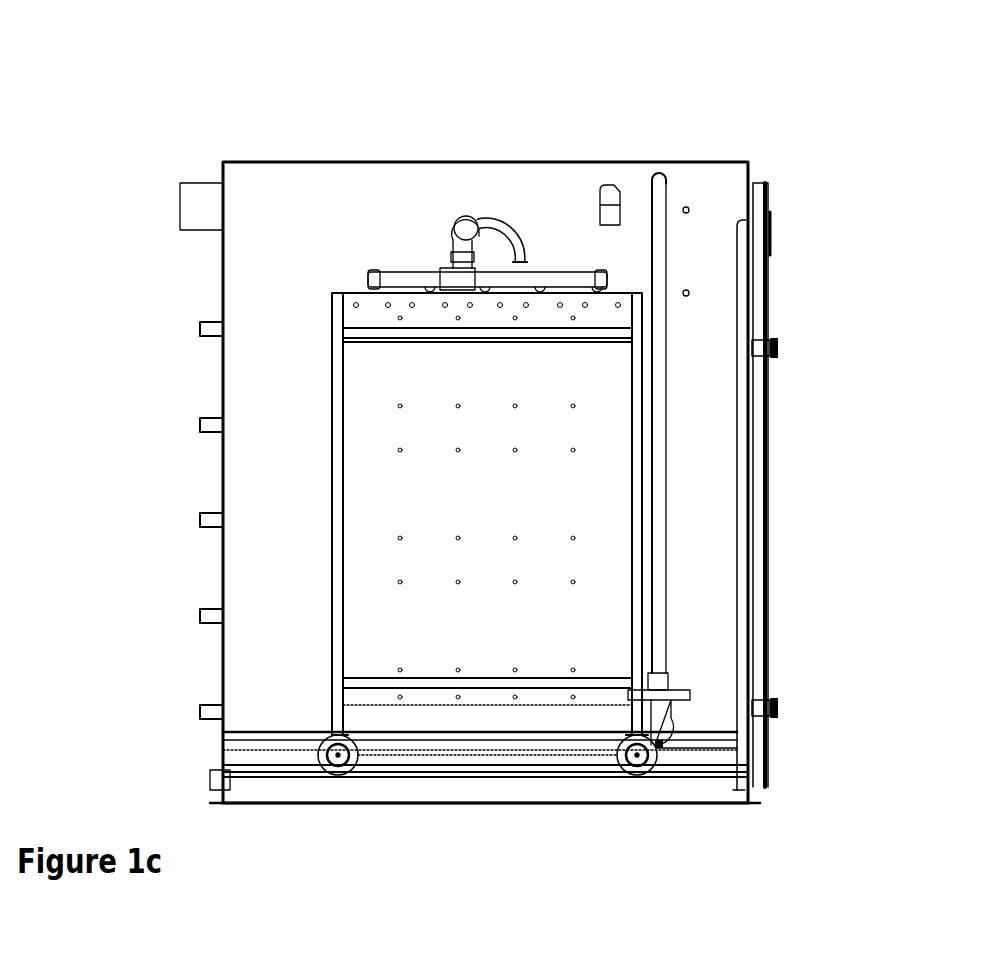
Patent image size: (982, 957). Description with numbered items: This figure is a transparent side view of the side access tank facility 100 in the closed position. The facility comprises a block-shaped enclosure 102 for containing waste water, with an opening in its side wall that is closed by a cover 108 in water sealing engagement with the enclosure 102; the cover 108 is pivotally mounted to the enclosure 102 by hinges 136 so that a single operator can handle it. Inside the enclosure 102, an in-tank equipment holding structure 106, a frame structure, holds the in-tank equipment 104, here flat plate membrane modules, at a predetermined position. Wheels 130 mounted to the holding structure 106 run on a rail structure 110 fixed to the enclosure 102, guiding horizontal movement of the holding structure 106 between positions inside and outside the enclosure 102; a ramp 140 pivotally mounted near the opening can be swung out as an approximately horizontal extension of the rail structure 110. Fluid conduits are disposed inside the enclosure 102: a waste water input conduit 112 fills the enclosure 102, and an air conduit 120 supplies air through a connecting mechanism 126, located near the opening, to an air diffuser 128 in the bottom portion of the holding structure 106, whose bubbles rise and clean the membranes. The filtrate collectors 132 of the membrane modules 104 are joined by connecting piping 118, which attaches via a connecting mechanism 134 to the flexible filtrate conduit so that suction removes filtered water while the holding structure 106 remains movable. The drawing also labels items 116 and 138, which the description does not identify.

The side access tank facility 100 is at (656, 54).
The enclosure 102 is at (266, 192).
The in-tank equipment 104 is at (371, 428).
The in-tank equipment holding structure 106 is at (329, 619).
The cover 108 is at (764, 466).
The rail structure 110 is at (691, 749).
The waste water input conduit 112 is at (607, 194).
The hose 116 is at (501, 231).
The connecting piping 118 is at (582, 279).
The air conduit 120 is at (659, 217).
The connecting mechanism 126 is at (672, 691).
The air diffuser 128 is at (201, 206).
The wheels 130 is at (353, 771).
The filtrate collector 132 is at (382, 314).
The connecting mechanism 134 is at (466, 224).
The hinges 136 is at (765, 351).
The rail 138 is at (411, 756).
The ramp 140 is at (743, 311).